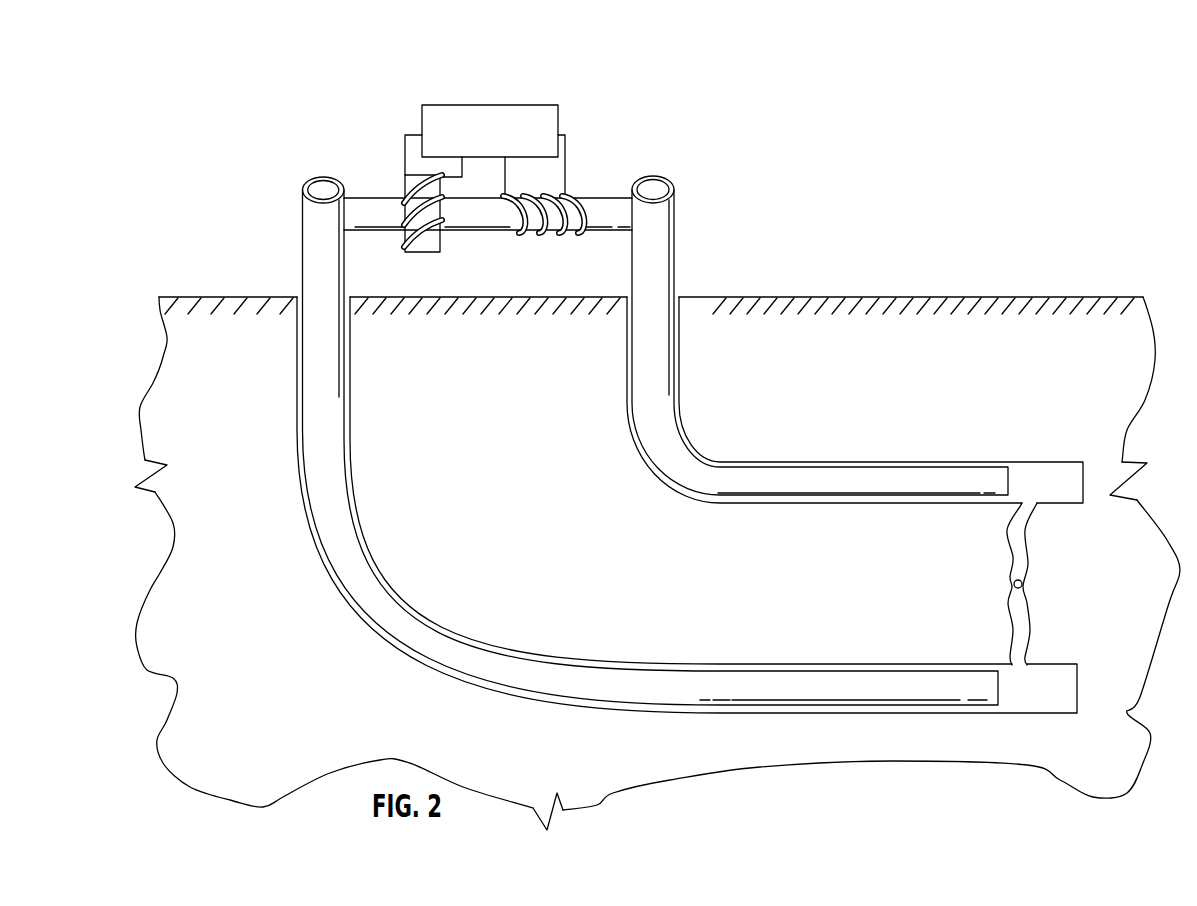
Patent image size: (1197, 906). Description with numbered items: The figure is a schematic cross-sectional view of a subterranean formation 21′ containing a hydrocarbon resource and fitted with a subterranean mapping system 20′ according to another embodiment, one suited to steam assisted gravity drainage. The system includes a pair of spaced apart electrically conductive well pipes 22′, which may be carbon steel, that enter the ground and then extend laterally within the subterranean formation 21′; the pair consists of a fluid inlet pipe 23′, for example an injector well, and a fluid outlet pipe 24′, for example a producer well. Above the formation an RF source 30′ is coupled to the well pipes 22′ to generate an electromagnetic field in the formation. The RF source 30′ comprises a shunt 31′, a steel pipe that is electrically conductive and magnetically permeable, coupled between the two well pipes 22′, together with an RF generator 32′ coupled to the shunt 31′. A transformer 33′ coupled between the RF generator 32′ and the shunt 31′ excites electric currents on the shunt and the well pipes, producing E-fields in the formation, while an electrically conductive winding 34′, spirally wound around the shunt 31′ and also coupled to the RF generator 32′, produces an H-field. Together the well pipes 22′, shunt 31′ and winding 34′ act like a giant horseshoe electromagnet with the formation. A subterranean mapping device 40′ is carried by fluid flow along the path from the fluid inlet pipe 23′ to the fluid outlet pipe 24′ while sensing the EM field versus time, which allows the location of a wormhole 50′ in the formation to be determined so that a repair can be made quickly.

The subterranean mapping system 20′ is at (293, 127).
The subterranean formation 21′ is at (903, 340).
The electrically conductive well pipes 22′ is at (302, 223).
The fluid inlet pipe 23′ is at (317, 273).
The fluid outlet pipe 24′ is at (657, 255).
The radiofrequency (RF) source 30′ is at (400, 150).
The shunt 31′ is at (592, 207).
The RF generator 32′ is at (537, 110).
The transformer 33′ is at (403, 197).
The electrically conductive winding 34′ is at (573, 232).
The subterranean mapping device 40′ is at (1018, 618).
The wormhole 50′ is at (1027, 585).